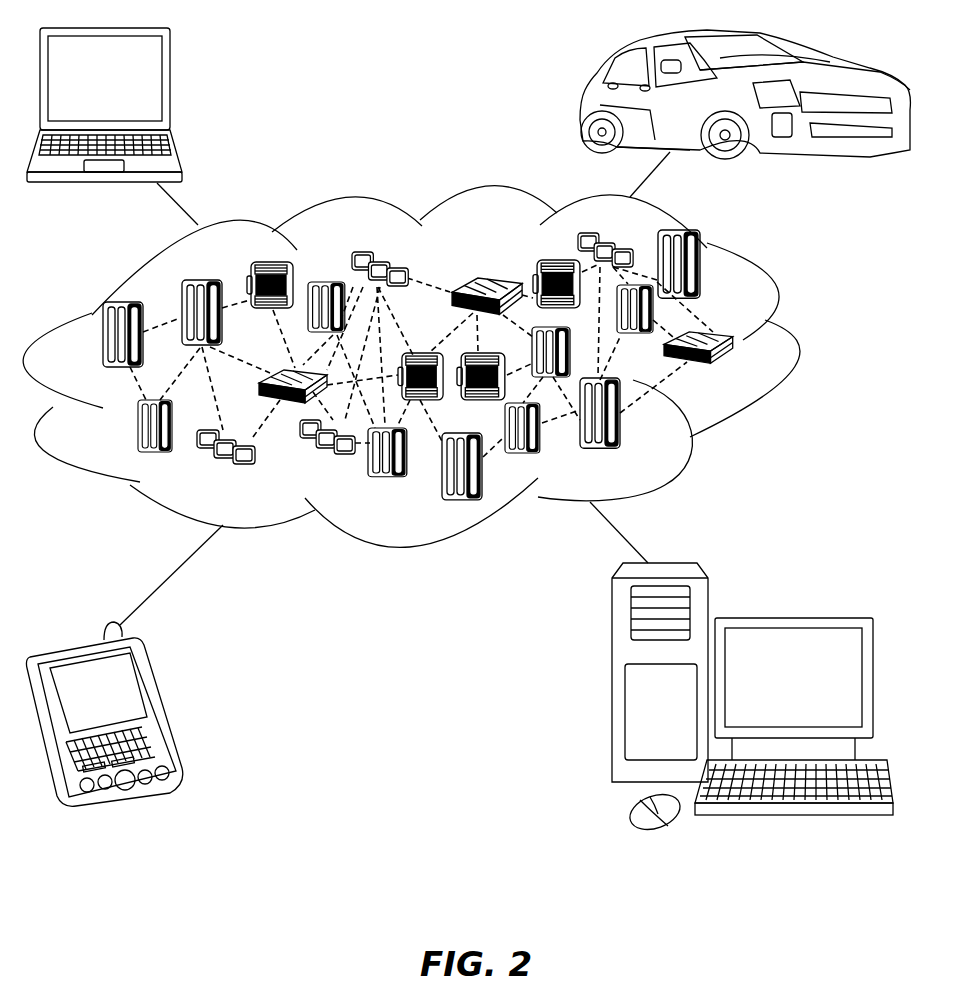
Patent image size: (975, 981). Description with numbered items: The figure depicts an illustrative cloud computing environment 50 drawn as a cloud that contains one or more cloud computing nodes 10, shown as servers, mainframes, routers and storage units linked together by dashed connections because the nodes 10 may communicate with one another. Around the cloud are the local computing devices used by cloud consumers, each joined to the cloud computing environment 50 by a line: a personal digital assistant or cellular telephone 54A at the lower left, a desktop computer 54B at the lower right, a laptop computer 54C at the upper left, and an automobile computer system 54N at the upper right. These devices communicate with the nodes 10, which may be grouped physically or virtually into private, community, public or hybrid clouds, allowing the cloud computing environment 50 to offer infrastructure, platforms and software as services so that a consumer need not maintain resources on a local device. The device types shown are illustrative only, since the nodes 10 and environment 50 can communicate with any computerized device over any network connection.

The laptop computer 54C is at (172, 85).
The automobile computer system 54N is at (585, 102).
The personal digital assistant or cellular telephone 54A is at (163, 707).
The desktop computer 54B is at (790, 617).
The cloud computing environment 50 is at (793, 347).
The cloud computing nodes 10 is at (745, 377).